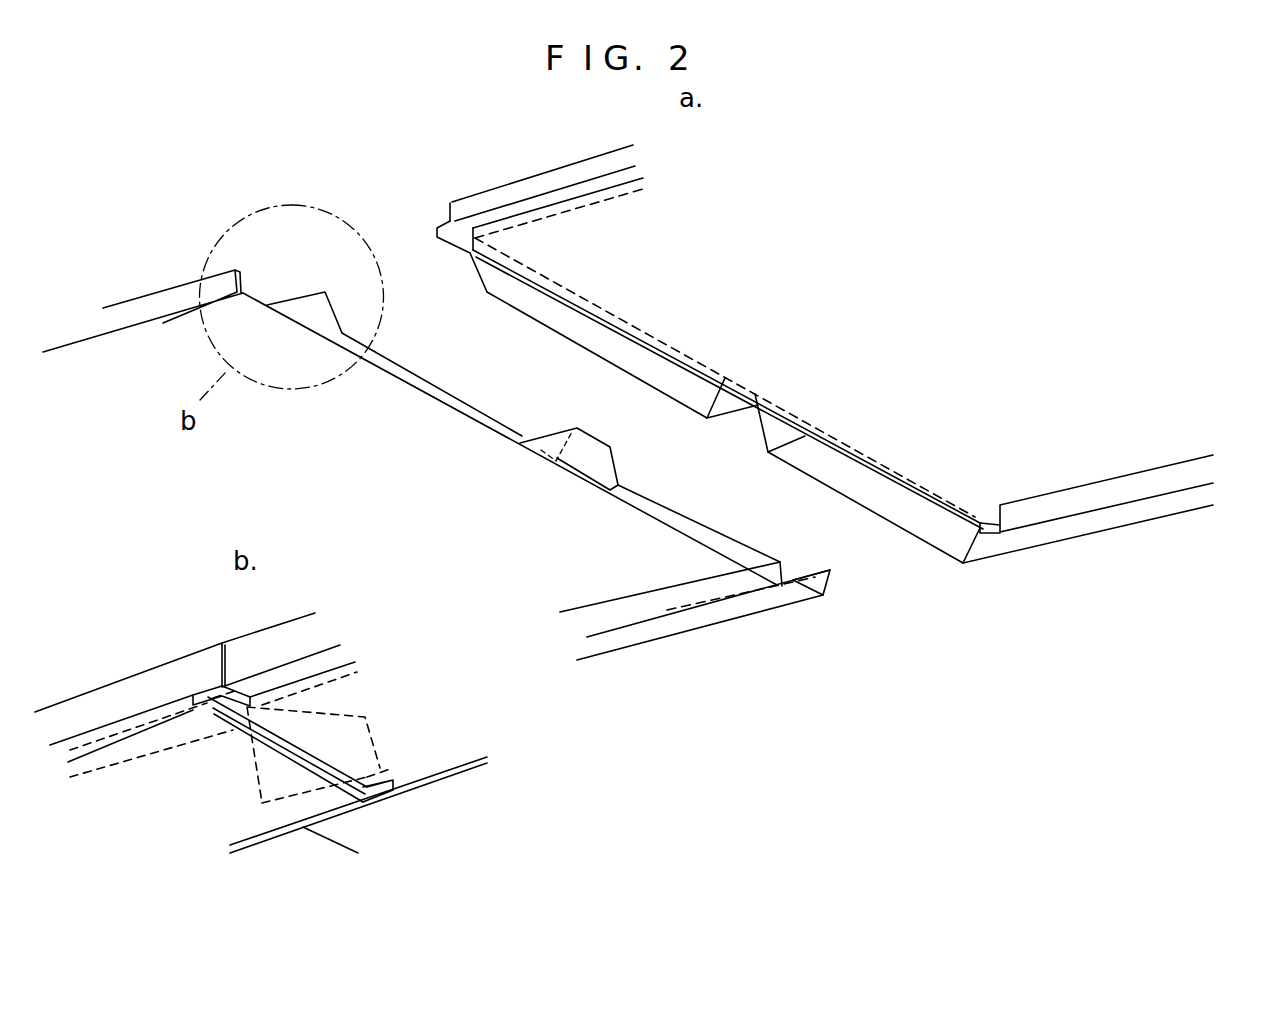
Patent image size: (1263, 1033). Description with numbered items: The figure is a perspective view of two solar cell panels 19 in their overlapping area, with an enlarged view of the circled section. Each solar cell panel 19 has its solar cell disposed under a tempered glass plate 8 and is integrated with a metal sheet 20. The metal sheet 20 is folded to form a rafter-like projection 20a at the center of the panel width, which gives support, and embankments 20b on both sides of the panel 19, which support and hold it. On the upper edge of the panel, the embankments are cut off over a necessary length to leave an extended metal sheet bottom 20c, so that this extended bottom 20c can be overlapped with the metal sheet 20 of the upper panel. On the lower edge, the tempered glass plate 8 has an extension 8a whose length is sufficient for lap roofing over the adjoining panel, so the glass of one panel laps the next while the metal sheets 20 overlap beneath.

The tempered glass plate 8 is at (761, 298).
The extension 8a is at (992, 532).
The solar cell panel 19 is at (1083, 572).
The metal sheet 20 is at (680, 517).
The rafter-like projection 20a is at (617, 462).
The embankments 20b is at (478, 205).
The extended metal sheet bottom 20c is at (818, 592).